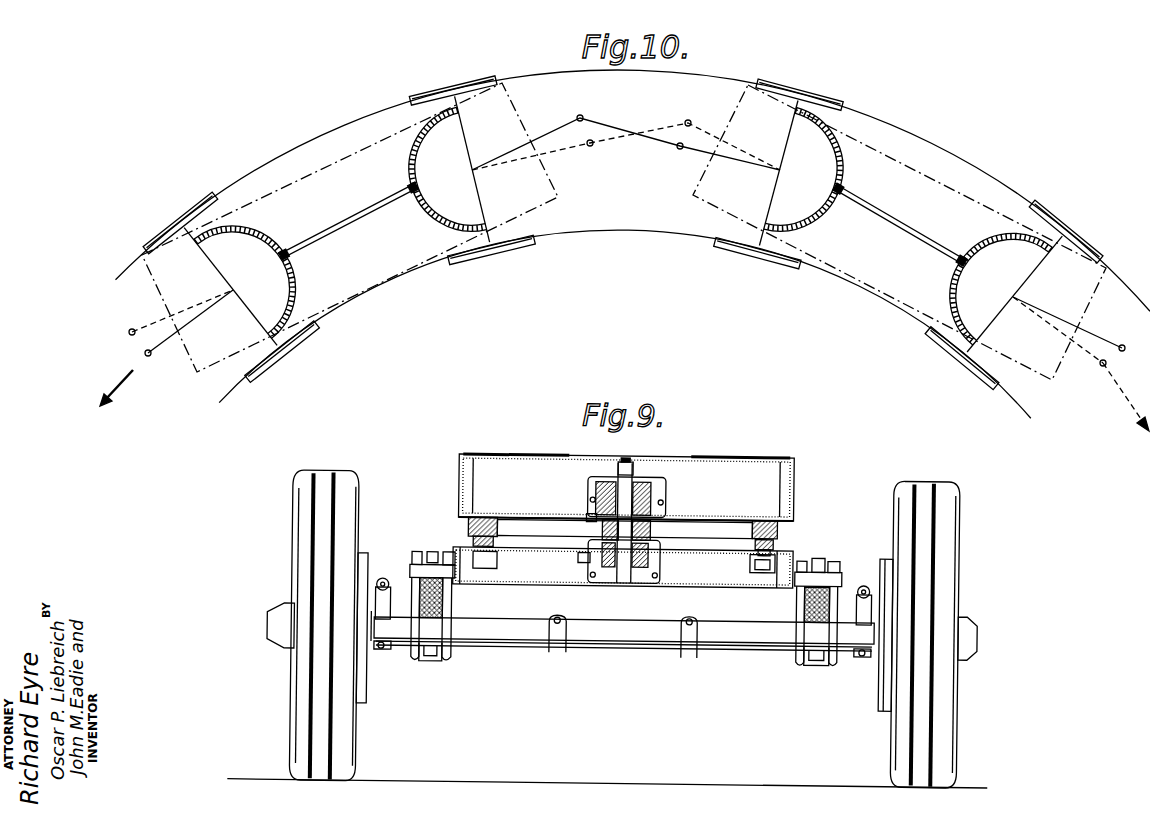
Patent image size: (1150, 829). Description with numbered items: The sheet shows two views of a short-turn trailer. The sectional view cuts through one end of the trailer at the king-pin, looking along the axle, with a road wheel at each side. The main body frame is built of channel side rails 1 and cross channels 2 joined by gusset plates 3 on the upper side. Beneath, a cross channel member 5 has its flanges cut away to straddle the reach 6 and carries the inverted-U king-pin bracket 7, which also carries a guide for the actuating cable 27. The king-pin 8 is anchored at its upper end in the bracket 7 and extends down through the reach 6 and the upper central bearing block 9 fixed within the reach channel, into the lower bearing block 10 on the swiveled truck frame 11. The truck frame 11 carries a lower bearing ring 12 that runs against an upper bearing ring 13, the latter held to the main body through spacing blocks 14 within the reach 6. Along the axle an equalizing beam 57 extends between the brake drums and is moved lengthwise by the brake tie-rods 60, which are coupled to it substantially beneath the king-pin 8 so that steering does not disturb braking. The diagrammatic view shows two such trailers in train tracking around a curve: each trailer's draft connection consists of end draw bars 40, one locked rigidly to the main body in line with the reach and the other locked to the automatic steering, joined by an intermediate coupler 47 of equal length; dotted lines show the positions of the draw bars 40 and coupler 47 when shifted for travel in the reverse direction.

In FIG. 9, the channel side rails 1 is at (458, 486).
In FIG. 9, the cross channels 2 is at (768, 486).
In FIG. 9, the gusset plates 3 is at (534, 455).
In FIG. 9, the cross channel member 5 is at (708, 520).
In FIG. 9, the reach 6 is at (672, 518).
In FIG. 9, the king-pin bracket 7 is at (651, 478).
In FIG. 9, the king-pin 8 is at (622, 576).
In FIG. 9, the upper central bearing block 9 is at (588, 520).
In FIG. 9, the lower bearing block 10 is at (655, 564).
In FIG. 9, the swiveled truck frame 11 is at (733, 574).
In FIG. 9, the lower bearing ring 12 is at (757, 553).
In FIG. 9, the upper bearing ring 13 is at (777, 545).
In FIG. 9, the spacing blocks 14 is at (780, 530).
In FIG. 9, the actuating cable 27 is at (616, 467).
In FIG. 10, the draw bar 40 is at (214, 306).
In FIG. 10, the intermediate coupler 47 is at (604, 127).
In FIG. 9, the equalizing rod or beam 57 is at (536, 648).
In FIG. 9, the tie-rods 60 is at (618, 650).